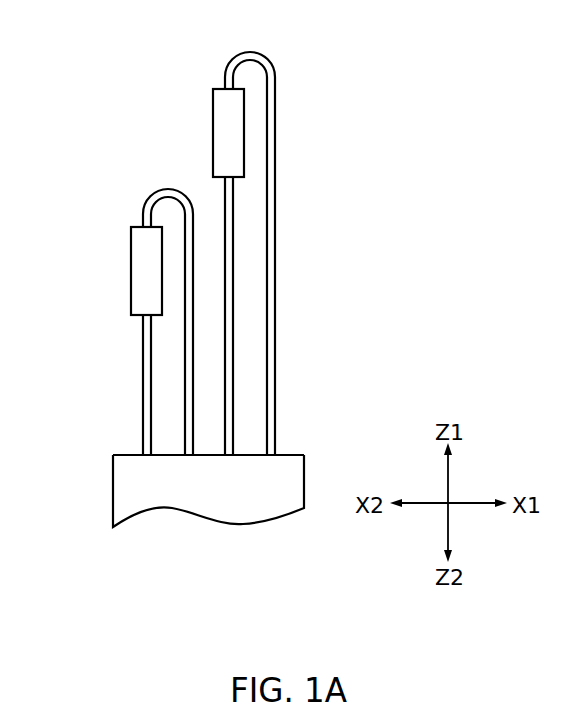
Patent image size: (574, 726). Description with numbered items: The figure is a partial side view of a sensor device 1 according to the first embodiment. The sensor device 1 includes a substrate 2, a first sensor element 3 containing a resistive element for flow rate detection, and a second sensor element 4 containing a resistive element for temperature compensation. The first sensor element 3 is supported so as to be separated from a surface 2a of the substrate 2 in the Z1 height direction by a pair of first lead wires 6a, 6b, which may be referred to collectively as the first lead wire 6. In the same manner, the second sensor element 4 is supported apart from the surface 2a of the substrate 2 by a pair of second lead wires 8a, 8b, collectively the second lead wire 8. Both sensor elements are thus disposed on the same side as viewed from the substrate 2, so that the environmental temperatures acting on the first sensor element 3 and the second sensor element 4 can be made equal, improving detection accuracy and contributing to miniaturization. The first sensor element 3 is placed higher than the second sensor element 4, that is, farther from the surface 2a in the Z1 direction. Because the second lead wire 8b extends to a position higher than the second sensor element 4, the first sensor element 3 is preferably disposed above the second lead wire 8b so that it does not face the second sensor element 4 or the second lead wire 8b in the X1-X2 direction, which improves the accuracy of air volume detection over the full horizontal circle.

The sensor device 1 is at (311, 70).
The substrate 2 is at (290, 472).
The surface of the substrate 2a is at (283, 453).
The first sensor element 3 is at (218, 122).
The second sensor element 4 is at (135, 263).
The first lead wire 6 is at (353, 207).
The first lead wire 6a is at (228, 256).
The first lead wire 6b is at (270, 280).
The second lead wire 8 is at (65, 343).
The second lead wire 8a is at (146, 373).
The second lead wire 8b is at (188, 423).